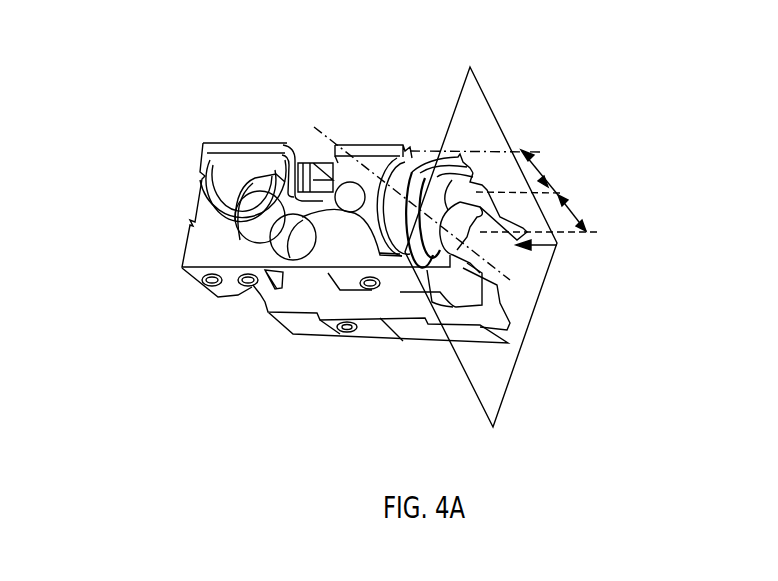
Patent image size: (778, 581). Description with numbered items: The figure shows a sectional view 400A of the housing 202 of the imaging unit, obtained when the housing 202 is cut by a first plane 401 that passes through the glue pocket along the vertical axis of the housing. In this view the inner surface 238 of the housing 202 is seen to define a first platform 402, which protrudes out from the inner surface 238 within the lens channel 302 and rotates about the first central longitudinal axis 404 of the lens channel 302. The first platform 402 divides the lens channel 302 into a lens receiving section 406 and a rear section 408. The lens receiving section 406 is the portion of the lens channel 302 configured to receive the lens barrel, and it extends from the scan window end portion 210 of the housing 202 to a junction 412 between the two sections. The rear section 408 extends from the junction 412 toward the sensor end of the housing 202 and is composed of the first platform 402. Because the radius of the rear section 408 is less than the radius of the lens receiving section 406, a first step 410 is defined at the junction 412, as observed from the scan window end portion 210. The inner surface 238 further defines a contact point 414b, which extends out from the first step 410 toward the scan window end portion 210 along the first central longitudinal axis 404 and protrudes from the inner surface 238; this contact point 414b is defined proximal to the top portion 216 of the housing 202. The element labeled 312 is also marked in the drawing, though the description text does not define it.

The sectional view 400A is at (184, 108).
The housing 202 is at (183, 250).
The scan window end portion 210 is at (198, 150).
The top portion 216 is at (262, 143).
The first central longitudinal axis 404 is at (337, 146).
The inner surface 238 is at (403, 214).
The junction 412 is at (413, 217).
The inner surface 312 is at (458, 176).
The lens channel 302 is at (413, 212).
The first step 410 is at (370, 293).
The first platform 402 is at (500, 255).
The first plane 401 is at (497, 138).
The contact point 414b is at (462, 181).
The lens receiving section 406 is at (545, 168).
The rear section 408 is at (577, 214).